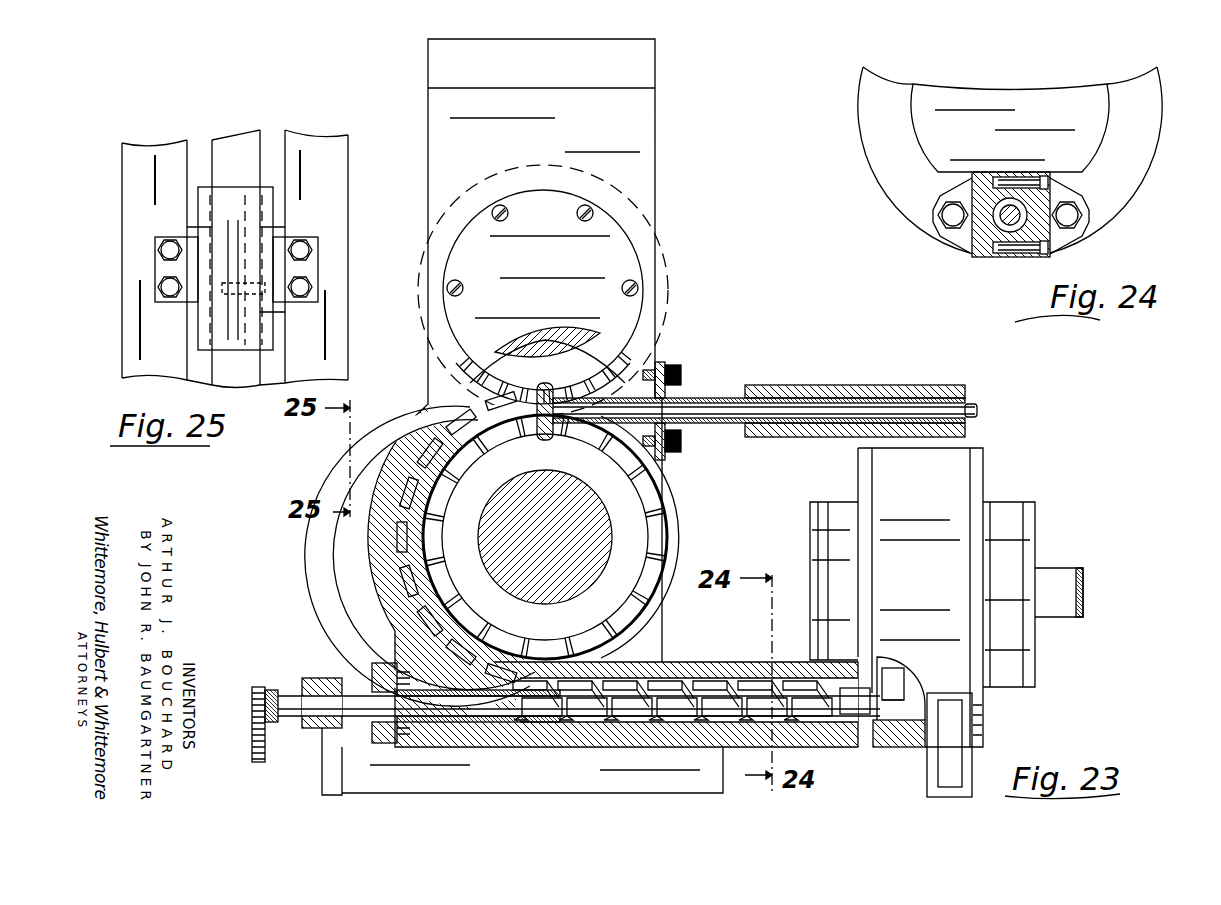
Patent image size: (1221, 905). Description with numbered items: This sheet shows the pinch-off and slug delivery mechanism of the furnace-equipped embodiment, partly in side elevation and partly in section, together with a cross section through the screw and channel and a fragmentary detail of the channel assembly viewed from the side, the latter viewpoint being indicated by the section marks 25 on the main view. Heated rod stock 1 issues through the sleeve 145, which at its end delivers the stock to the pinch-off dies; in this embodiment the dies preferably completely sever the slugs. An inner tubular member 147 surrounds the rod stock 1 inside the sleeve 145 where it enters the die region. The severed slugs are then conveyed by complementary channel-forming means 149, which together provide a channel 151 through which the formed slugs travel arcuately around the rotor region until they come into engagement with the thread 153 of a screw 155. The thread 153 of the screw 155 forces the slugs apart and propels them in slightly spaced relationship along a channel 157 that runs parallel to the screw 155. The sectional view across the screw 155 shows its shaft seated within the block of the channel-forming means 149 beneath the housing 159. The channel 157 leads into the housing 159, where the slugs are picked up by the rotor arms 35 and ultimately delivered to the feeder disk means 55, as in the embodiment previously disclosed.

In FIG. 23, the rod stock 1 is at (818, 407).
In FIG. 23, the chain link / bolt 25 is at (676, 678).
In FIG. 24, the chain link / bolt 25 is at (1038, 176).
In FIG. 23, the rotor arm 35 is at (890, 668).
In FIG. 23, the feeder disk means 55 is at (933, 762).
In FIG. 23, the sleeve 145 is at (882, 388).
In FIG. 23, the tubular shaft 147 is at (712, 396).
In FIG. 23, the channel-forming means 149 is at (378, 513).
In FIG. 24, the channel-forming means 149 is at (1030, 258).
In FIG. 23, the channel 151 is at (395, 548).
In FIG. 23, the thread 153 is at (537, 722).
In FIG. 24, the thread 153 is at (1026, 208).
In FIG. 23, the screw 155 is at (502, 705).
In FIG. 24, the screw 155 is at (975, 246).
In FIG. 23, the channel 157 is at (714, 678).
In FIG. 23, the housing 159 is at (875, 496).
In FIG. 24, the housing 159 is at (1143, 112).